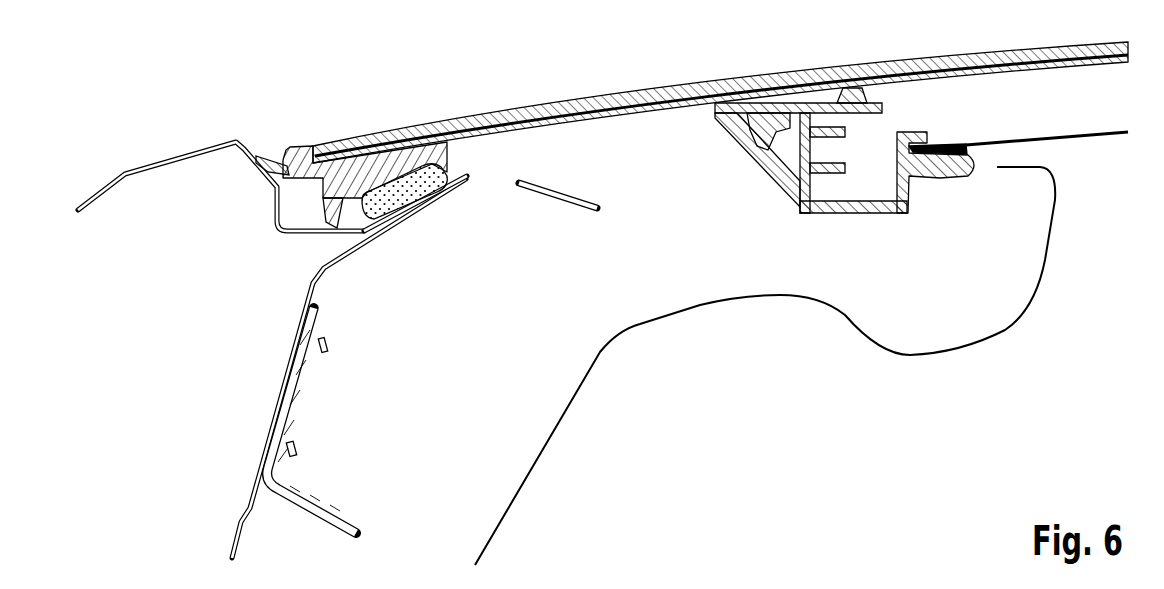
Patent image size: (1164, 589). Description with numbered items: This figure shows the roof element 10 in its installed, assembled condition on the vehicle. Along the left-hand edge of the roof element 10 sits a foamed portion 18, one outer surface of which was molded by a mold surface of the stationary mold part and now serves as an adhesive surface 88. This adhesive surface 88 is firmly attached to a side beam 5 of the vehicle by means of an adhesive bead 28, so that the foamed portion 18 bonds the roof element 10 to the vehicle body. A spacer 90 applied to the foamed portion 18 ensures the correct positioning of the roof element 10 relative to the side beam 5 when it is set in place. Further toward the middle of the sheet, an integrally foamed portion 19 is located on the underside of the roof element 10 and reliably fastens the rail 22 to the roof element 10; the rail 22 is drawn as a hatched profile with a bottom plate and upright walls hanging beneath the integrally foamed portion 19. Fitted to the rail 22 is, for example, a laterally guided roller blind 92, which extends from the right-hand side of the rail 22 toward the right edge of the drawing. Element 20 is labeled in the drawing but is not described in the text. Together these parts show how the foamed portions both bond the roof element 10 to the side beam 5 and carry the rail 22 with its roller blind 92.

The side beam 5 is at (300, 233).
The roof element 10 is at (622, 92).
The foamed portion 18 is at (370, 170).
The integrally foamed portion 19 is at (735, 113).
The flange tab 20 is at (273, 168).
The rail 22 is at (858, 212).
The adhesive bead 28 is at (407, 213).
The adhesive surface 88 is at (447, 165).
The spacer 90 is at (337, 230).
The roller blind 92 is at (1102, 136).